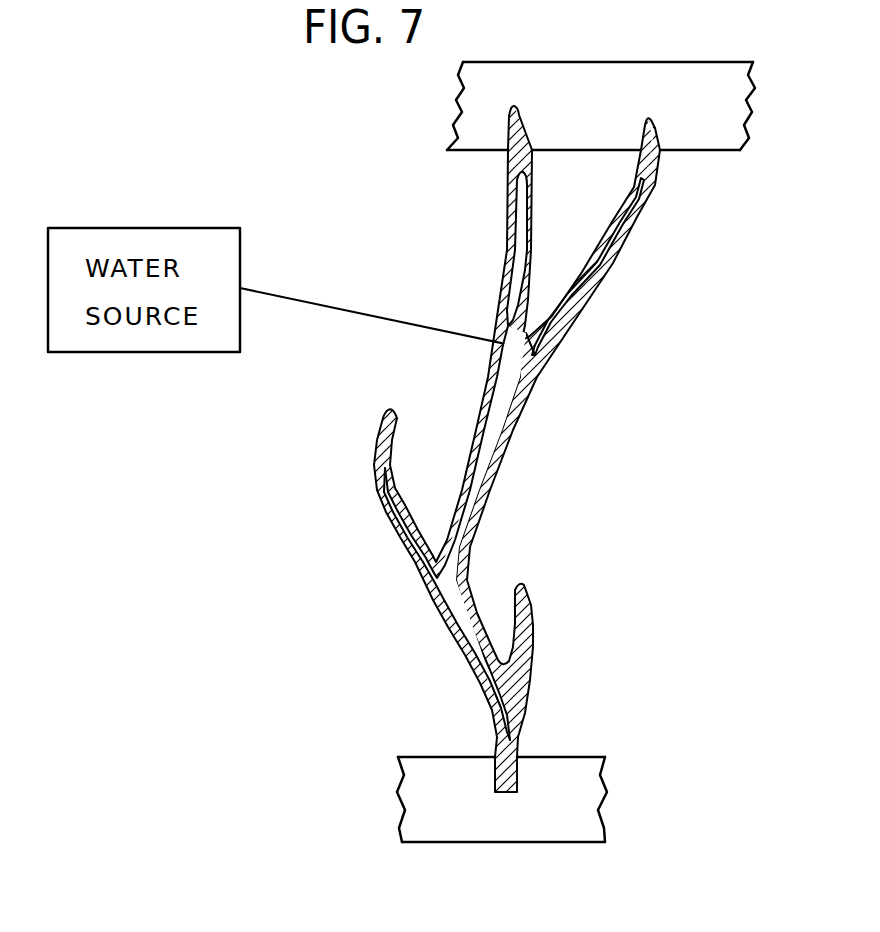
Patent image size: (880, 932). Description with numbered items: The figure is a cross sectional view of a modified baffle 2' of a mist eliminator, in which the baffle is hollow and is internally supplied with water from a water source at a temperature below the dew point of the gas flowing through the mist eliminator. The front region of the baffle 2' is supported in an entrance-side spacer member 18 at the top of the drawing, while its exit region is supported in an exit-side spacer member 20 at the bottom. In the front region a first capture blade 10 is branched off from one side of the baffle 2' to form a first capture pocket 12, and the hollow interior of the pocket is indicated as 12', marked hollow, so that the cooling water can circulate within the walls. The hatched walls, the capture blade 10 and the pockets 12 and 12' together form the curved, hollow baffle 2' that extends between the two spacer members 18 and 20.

The entrance-side spacer member 18 is at (662, 75).
The exit-side spacer member 20 is at (503, 813).
The first capture blade 10 is at (645, 178).
The first capture pocket 12 is at (563, 455).
The hollow capture pocket 12' is at (574, 471).
The hollow baffle 2' is at (574, 449).